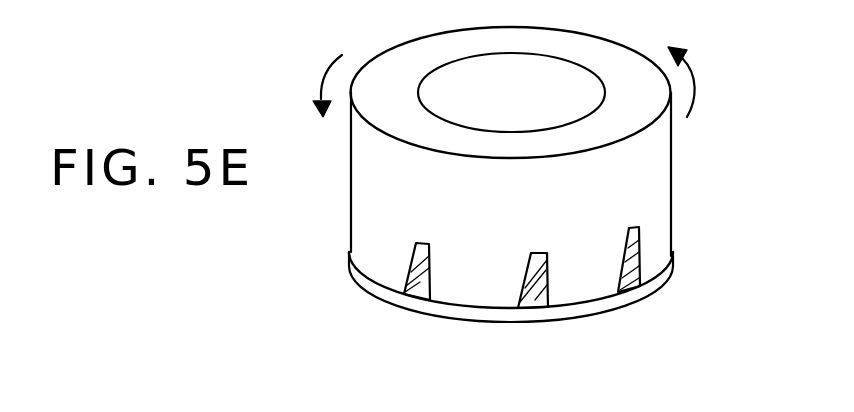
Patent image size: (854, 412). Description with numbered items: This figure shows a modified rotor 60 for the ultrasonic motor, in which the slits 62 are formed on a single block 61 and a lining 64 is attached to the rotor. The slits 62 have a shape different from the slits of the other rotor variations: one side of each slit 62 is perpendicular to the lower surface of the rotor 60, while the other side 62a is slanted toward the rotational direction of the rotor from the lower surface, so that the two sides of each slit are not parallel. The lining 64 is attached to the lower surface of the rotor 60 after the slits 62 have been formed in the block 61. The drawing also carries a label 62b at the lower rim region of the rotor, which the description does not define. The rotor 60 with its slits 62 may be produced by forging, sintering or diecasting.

The rotor 60 is at (672, 152).
The single block 61 is at (658, 198).
The slits 62 is at (420, 297).
The slanted side of slit 62a is at (414, 272).
The flange 62b is at (660, 270).
The lining 64 is at (597, 306).